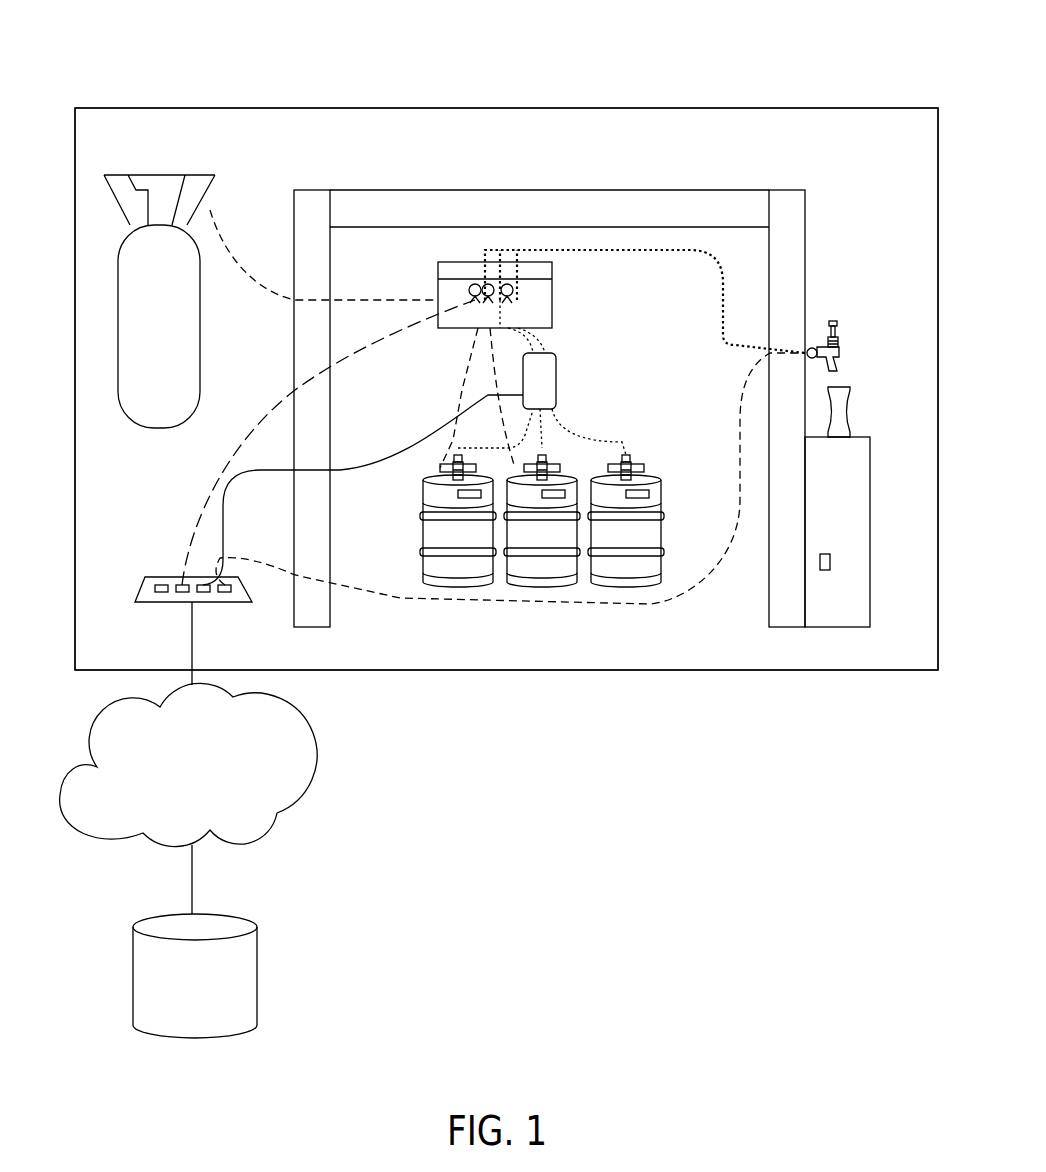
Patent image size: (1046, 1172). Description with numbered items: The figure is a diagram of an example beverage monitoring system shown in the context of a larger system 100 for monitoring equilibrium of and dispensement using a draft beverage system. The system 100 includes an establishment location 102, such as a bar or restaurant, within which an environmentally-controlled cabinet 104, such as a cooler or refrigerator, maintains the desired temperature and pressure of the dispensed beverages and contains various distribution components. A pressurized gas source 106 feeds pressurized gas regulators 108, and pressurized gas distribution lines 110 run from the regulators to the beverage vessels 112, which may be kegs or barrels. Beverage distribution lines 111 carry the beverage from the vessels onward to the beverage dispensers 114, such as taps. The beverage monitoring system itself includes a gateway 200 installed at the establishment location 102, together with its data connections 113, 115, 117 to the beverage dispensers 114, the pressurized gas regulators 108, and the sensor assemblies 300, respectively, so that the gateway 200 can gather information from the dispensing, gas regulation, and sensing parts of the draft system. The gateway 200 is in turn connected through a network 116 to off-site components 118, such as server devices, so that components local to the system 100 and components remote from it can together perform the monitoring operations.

The system 100 is at (230, 108).
The establishment location 102 is at (881, 152).
The environmentally-controlled cabinet 104 is at (683, 203).
The pressurized gas source 106 is at (185, 332).
The pressurized gas regulators 108 is at (515, 305).
The pressurized gas distribution lines 110 is at (383, 300).
The beverage distribution lines 111 is at (708, 257).
The beverage vessels 112 is at (661, 505).
The data connection 113 is at (657, 608).
The beverage dispensers 114 is at (840, 345).
The data connection 115 is at (210, 468).
The network 116 is at (184, 787).
The data connection 117 is at (380, 458).
The off-site components 118 is at (184, 1000).
The gateway 200 is at (148, 585).
The sensor assemblies 300 is at (545, 382).